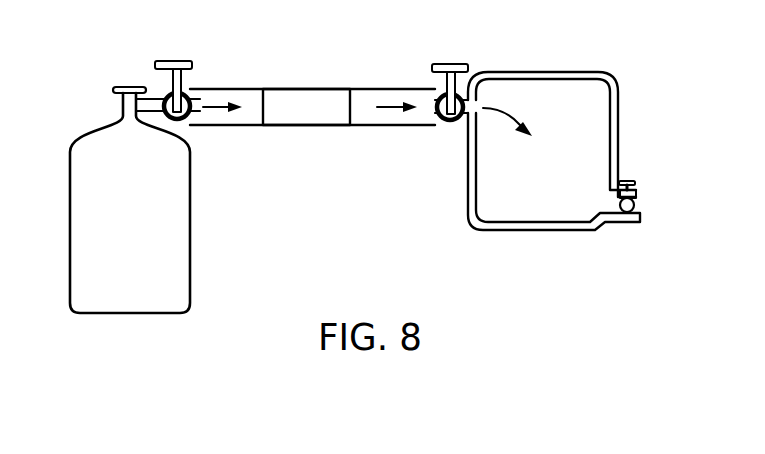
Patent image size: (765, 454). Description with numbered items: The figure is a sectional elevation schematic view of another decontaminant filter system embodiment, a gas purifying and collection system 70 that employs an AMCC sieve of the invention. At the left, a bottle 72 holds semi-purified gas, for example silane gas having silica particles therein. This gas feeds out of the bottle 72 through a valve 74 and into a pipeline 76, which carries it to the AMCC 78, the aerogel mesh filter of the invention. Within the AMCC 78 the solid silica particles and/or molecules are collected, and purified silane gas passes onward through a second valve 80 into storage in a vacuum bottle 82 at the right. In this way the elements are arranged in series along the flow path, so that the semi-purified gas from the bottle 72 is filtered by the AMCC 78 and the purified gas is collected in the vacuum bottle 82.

The gas purifying and collection system 70 is at (222, 64).
The bottle 72 is at (190, 266).
The valve 74 is at (178, 120).
The pipeline 76 is at (257, 89).
The AMCC 78 is at (335, 89).
The valve 80 is at (443, 125).
The vacuum bottle 82 is at (614, 145).